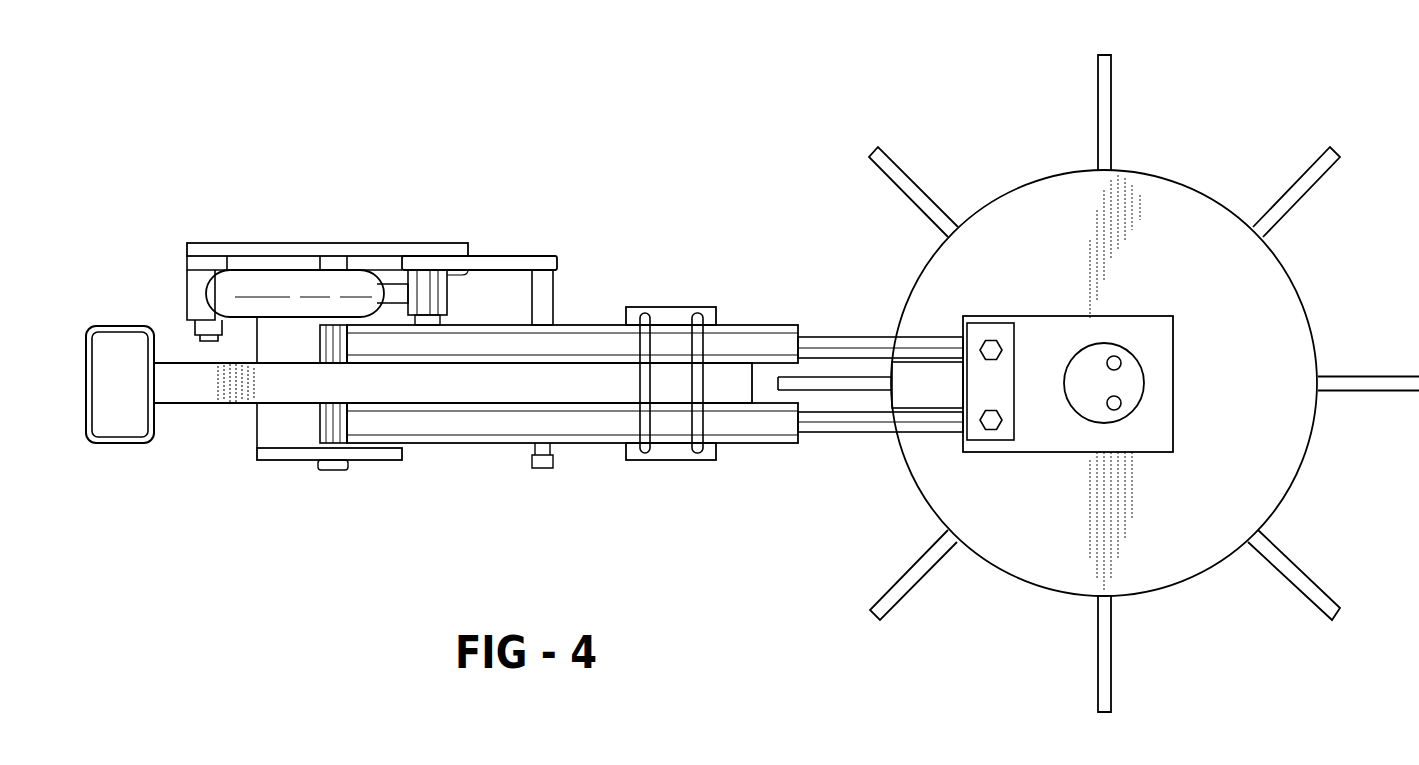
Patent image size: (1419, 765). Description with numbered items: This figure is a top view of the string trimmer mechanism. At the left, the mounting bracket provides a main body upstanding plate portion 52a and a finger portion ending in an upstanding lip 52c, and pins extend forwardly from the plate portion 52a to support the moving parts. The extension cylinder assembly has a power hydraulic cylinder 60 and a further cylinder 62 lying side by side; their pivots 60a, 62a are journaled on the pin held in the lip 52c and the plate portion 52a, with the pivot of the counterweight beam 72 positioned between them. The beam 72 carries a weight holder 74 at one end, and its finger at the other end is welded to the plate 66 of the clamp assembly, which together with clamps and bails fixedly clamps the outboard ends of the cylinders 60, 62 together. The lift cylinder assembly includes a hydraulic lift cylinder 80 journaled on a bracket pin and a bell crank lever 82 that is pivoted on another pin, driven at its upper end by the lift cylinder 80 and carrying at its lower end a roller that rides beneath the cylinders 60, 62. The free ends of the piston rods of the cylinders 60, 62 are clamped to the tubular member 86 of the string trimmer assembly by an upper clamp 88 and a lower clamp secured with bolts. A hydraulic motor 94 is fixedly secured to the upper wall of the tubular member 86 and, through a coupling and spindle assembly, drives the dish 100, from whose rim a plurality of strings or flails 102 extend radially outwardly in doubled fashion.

The weight holder 74 is at (118, 326).
The beam 72 is at (208, 400).
The main body upstanding plate portion 52a is at (373, 245).
The upstanding lip 52c is at (308, 463).
The hydraulic lift cylinder 80 is at (285, 288).
The bell crank lever 82 is at (540, 243).
The power hydraulic cylinder 60 is at (565, 340).
The further cylinder 62 is at (427, 440).
The plate 66 is at (667, 303).
The pivot 60a is at (868, 340).
The pivot 62a is at (825, 418).
The tubular member 86 is at (1185, 327).
The upper clamp 88 is at (978, 437).
The hydraulic motor 94 is at (1134, 380).
The dish 100 is at (988, 570).
The strings or flails 102 is at (1288, 583).